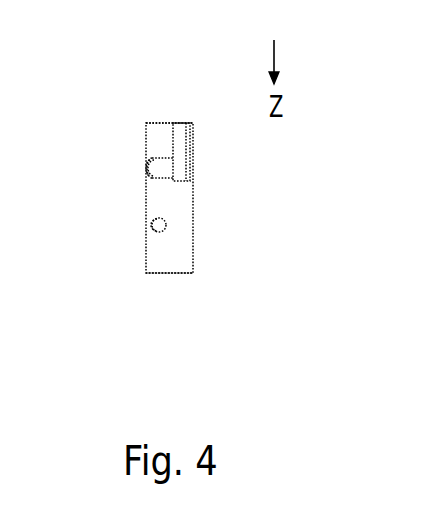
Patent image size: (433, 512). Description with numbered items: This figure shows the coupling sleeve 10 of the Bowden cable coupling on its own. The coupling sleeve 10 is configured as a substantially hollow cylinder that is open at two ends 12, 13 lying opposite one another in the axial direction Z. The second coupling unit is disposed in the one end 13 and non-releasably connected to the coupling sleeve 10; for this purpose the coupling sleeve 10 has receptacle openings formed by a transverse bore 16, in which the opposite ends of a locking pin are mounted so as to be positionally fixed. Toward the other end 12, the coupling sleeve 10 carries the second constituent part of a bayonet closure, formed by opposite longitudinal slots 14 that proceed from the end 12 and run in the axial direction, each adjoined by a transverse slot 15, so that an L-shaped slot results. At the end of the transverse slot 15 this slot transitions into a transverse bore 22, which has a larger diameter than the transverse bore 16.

The coupling sleeve 10 is at (89, 220).
The end 12 is at (164, 100).
The end 13 is at (167, 299).
The longitudinal slot 14 is at (179, 140).
The transverse slot 15 is at (170, 170).
The transverse bore 16 is at (160, 225).
The transverse bore 22 is at (153, 163).